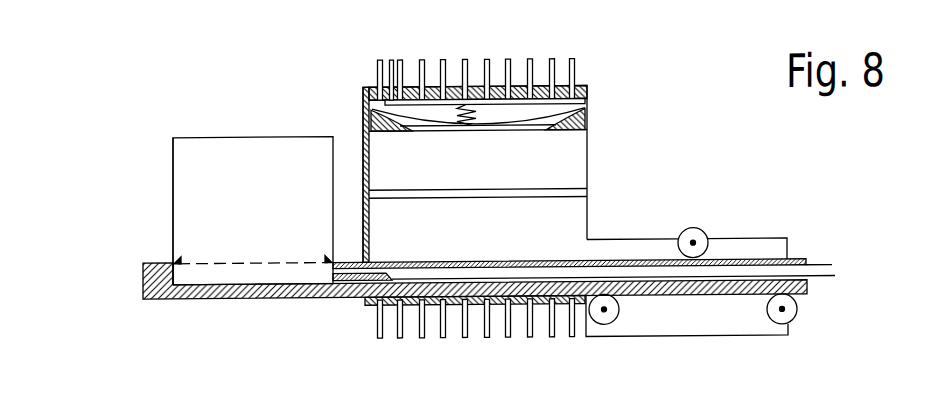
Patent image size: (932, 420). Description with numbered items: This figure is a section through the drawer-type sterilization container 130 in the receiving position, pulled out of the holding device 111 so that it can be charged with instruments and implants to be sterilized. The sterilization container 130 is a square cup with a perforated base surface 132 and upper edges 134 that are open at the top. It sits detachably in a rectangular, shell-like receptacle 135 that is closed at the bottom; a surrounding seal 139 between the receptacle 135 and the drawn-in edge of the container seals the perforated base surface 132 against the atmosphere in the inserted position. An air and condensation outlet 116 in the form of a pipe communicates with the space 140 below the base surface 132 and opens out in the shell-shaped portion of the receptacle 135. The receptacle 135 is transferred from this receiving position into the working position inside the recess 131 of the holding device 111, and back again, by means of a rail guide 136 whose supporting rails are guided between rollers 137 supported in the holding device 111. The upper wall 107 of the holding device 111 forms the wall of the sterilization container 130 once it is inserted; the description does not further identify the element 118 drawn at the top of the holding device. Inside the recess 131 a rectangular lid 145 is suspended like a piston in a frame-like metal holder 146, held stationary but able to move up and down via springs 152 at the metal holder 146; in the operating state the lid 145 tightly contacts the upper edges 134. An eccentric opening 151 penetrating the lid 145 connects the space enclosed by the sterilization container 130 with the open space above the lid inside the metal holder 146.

The upper wall 107 is at (587, 86).
The holding device 111 is at (353, 85).
The air and condensation outlet 116 is at (669, 275).
The contact plate 118 is at (392, 60).
The sterilization container 130 is at (187, 196).
The recess 131 is at (545, 172).
The perforated base surface 132 is at (206, 206).
The upper edges 134 is at (210, 135).
The receptacle 135 is at (193, 297).
The rail guide 136 is at (338, 290).
The rollers 137 is at (607, 314).
The seal 139 is at (172, 256).
The space 140 is at (256, 280).
The lid 145 is at (566, 135).
The metal holder 146 is at (365, 122).
The eccentric opening 151 is at (532, 118).
The springs 152 is at (465, 112).